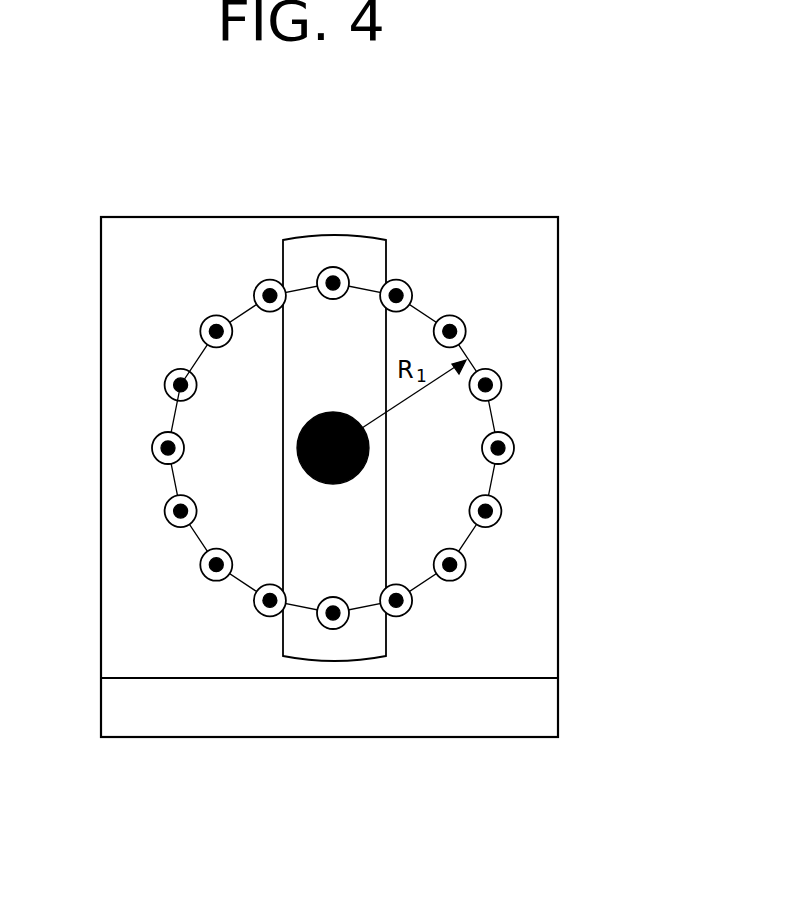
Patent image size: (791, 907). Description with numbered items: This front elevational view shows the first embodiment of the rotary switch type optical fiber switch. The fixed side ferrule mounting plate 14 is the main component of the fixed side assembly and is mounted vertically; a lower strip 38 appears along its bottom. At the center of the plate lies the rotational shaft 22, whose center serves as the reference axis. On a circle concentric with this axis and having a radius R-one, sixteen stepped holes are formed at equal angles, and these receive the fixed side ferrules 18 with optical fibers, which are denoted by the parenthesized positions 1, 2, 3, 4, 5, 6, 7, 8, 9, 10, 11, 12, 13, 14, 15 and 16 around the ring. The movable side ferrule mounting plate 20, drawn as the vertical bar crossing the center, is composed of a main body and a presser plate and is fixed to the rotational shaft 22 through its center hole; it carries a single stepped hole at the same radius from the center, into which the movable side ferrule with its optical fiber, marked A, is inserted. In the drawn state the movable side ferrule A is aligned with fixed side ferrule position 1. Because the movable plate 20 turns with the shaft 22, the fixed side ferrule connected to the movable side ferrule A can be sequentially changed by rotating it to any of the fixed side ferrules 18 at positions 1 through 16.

The fixed side ferrule position 1 is at (332, 255).
The fixed side ferrule position 2 is at (403, 280).
The fixed side ferrule position 3 is at (465, 317).
The fixed side ferrule position 4 is at (504, 379).
The fixed side ferrule position 5 is at (519, 448).
The fixed side ferrule position 6 is at (506, 519).
The fixed side ferrule position 7 is at (466, 578).
The fixed side ferrule position 8 is at (408, 618).
The fixed side ferrule position 9 is at (337, 630).
The fixed side ferrule position 10 is at (260, 617).
The fixed side ferrule position 11 is at (199, 580).
The fixed side ferrule position 12 is at (161, 520).
The fixed side ferrule position 13 is at (144, 450).
The fixed side ferrule mounting plate 14 is at (502, 216).
The fixed side ferrule position 15 is at (198, 319).
The fixed side ferrule position 16 is at (259, 282).
The fixed side ferrules 18 is at (181, 388).
The movable side ferrule mounting plate 20 is at (360, 235).
The rotational shaft 22 is at (362, 468).
The lower strip 38 is at (301, 714).